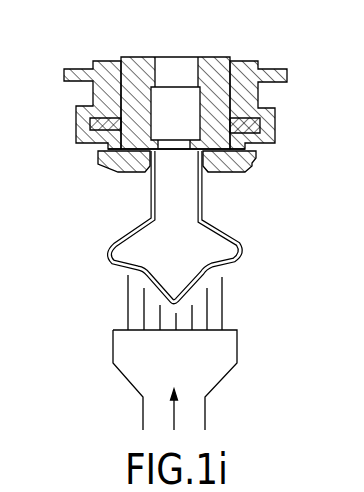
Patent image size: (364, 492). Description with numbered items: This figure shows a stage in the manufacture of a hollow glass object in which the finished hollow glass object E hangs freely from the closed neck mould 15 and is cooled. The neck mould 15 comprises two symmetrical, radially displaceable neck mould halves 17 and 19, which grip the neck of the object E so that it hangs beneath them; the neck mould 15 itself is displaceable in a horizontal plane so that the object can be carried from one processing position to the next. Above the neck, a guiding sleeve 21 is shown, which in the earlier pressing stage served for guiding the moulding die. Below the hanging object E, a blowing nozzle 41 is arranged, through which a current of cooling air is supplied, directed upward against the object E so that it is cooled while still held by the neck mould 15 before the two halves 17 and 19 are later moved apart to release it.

The neck mould 15 is at (95, 157).
The neck mould half 17 is at (252, 58).
The neck mould half 19 is at (100, 60).
The guiding sleeve 21 is at (213, 56).
The blowing nozzle 41 is at (237, 343).
The hollow glass object E is at (207, 208).